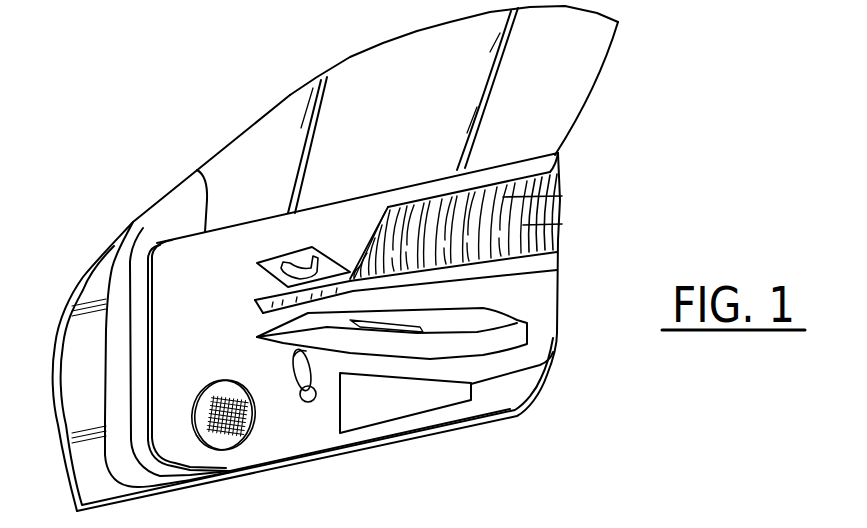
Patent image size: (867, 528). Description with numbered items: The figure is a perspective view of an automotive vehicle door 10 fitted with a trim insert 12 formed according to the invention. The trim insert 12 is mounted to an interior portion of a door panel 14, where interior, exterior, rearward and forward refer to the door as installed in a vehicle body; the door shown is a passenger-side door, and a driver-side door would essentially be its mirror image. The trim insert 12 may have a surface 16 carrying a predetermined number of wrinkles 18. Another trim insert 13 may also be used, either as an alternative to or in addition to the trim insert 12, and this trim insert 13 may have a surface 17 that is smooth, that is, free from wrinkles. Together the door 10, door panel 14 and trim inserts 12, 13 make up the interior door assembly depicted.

The automotive vehicle door 10 is at (133, 221).
The trim insert 12 is at (553, 163).
The trim insert 13 is at (553, 358).
The door panel 14 is at (157, 282).
The surface 16 is at (566, 188).
The surface 17 is at (465, 402).
The wrinkles 18 is at (562, 220).